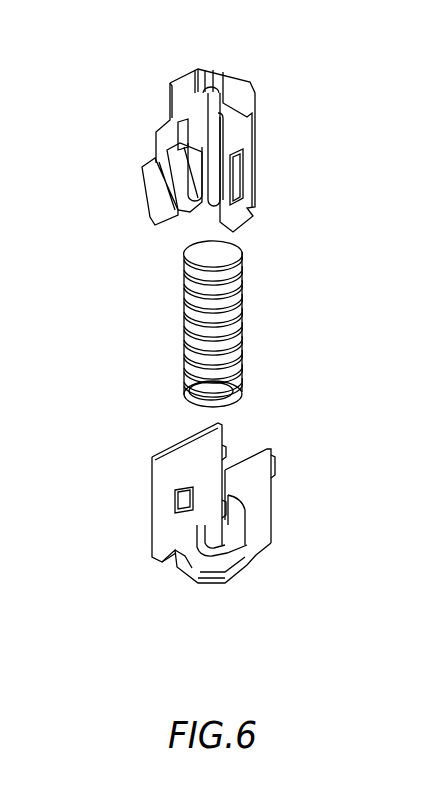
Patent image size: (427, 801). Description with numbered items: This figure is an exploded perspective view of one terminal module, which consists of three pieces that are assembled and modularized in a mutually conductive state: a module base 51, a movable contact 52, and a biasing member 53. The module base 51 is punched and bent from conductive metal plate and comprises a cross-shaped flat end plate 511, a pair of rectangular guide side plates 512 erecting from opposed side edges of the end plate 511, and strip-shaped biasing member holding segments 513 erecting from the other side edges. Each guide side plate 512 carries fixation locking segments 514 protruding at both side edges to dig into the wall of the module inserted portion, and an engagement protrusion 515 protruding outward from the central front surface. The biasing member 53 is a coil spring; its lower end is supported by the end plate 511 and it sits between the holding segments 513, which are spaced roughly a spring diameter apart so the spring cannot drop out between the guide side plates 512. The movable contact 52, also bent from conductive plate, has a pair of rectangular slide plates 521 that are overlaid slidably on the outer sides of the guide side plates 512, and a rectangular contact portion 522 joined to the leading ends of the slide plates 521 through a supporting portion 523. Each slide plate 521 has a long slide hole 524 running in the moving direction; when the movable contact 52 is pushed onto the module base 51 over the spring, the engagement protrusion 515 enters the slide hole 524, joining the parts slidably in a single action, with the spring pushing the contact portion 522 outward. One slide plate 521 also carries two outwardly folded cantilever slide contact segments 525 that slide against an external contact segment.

The module base 51 is at (247, 573).
The end plate 511 is at (206, 586).
The guide side plate 512 is at (175, 450).
The biasing member holding segment 513 is at (248, 541).
The fixation locking segment 514 is at (150, 488).
The engagement protrusion 515 is at (176, 505).
The movable contact 52 is at (253, 82).
The slide plate 521 is at (155, 130).
The contact portion 522 is at (216, 66).
The supporting portion 523 is at (168, 85).
The slide hole 524 is at (178, 135).
The slide contact segment 525 is at (148, 223).
The biasing member 53 is at (241, 307).